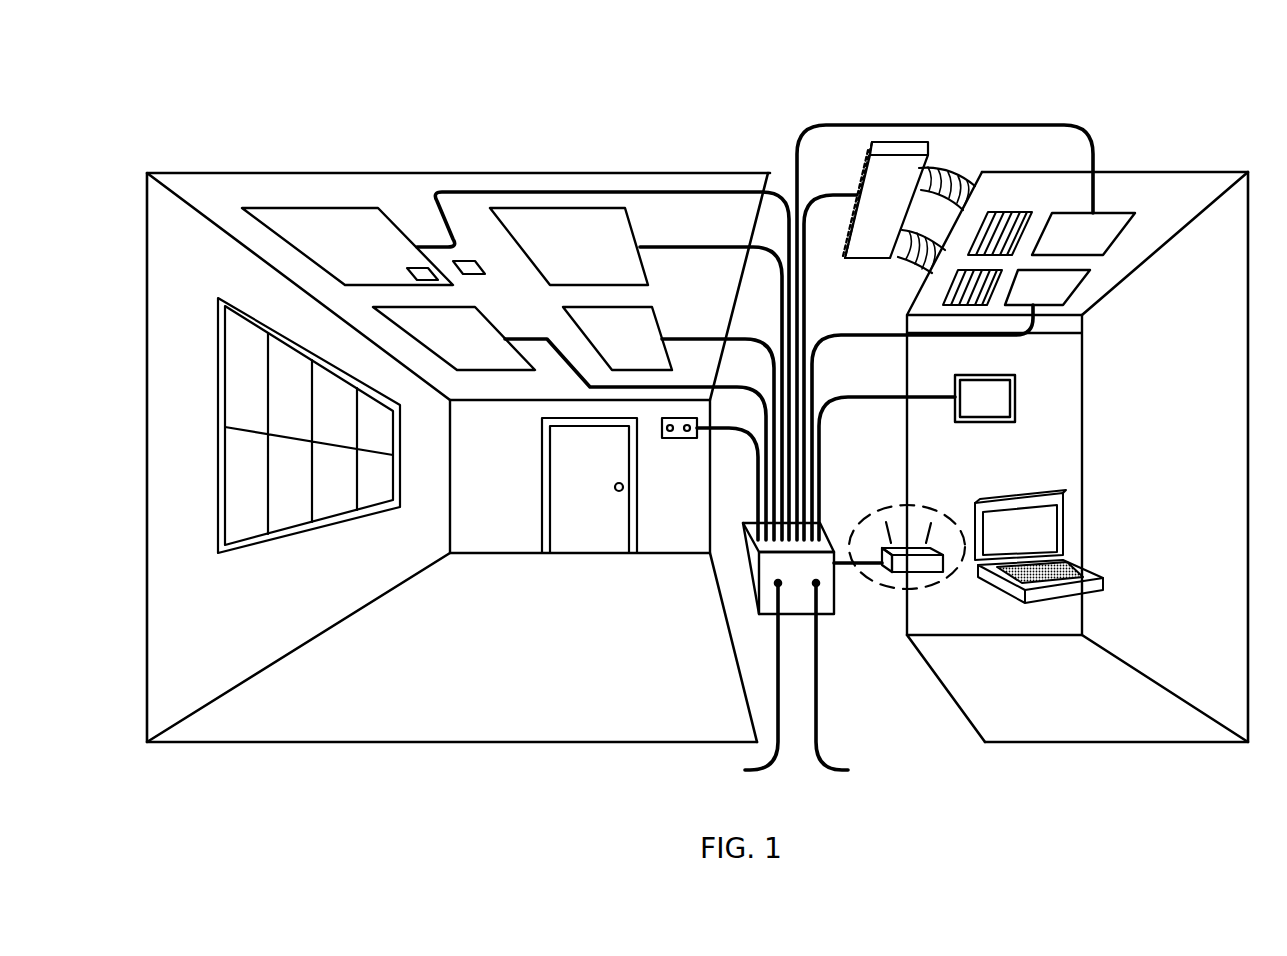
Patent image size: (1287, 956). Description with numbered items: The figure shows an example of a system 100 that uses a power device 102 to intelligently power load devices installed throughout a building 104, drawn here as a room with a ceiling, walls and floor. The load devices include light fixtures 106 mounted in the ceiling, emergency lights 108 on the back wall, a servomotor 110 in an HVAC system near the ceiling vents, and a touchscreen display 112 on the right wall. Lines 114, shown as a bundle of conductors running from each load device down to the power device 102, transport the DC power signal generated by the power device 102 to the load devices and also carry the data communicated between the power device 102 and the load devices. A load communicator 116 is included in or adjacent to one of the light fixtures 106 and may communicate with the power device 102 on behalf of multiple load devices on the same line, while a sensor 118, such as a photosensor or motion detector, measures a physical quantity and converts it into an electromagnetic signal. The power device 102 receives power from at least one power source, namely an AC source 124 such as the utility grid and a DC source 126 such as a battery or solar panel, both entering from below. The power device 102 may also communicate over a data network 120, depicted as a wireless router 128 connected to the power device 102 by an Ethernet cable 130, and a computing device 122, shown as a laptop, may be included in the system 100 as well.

The system 100 is at (434, 765).
The power device 102 is at (752, 563).
The building 104 is at (262, 750).
The light fixtures 106 is at (323, 207).
The emergency lights 108 is at (670, 438).
The servomotor in an HVAC system 110 is at (857, 176).
The touchscreen display 112 is at (1047, 428).
The lines 114 is at (857, 493).
The load communicator 116 is at (412, 277).
The sensor 118 is at (467, 261).
The data network 120 is at (970, 588).
The computing device 122 is at (1090, 570).
The AC source 124 is at (895, 697).
The DC source 126 is at (699, 697).
The wireless router 128 is at (912, 575).
The Ethernet cable 130 is at (858, 566).